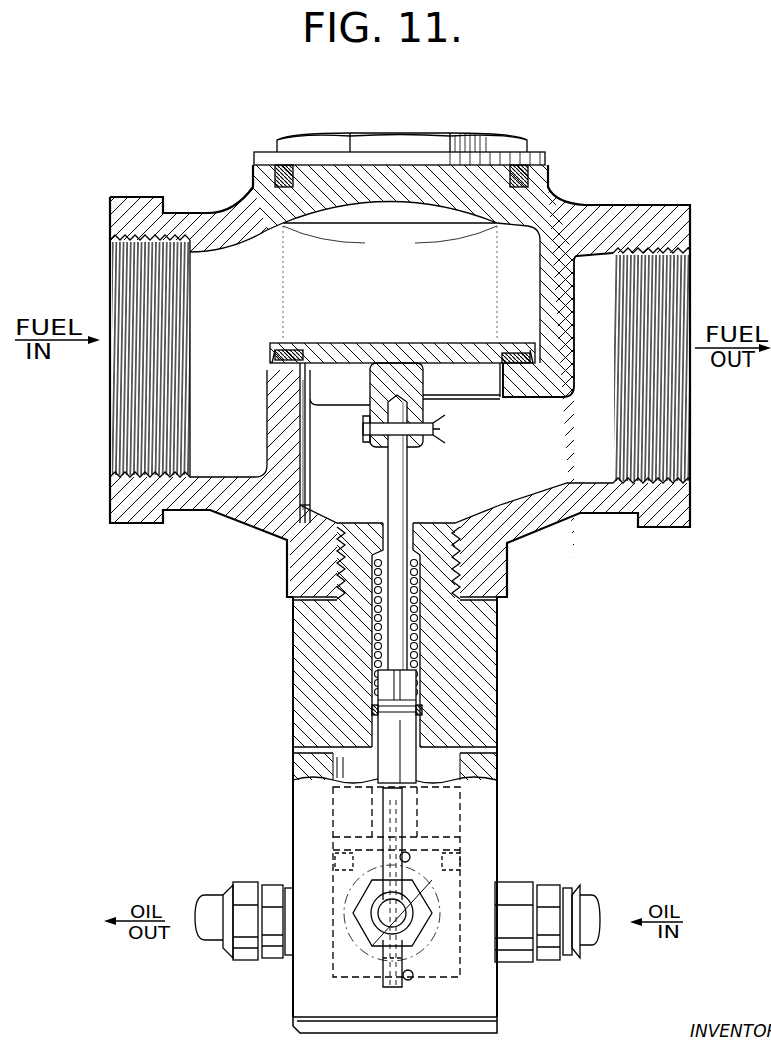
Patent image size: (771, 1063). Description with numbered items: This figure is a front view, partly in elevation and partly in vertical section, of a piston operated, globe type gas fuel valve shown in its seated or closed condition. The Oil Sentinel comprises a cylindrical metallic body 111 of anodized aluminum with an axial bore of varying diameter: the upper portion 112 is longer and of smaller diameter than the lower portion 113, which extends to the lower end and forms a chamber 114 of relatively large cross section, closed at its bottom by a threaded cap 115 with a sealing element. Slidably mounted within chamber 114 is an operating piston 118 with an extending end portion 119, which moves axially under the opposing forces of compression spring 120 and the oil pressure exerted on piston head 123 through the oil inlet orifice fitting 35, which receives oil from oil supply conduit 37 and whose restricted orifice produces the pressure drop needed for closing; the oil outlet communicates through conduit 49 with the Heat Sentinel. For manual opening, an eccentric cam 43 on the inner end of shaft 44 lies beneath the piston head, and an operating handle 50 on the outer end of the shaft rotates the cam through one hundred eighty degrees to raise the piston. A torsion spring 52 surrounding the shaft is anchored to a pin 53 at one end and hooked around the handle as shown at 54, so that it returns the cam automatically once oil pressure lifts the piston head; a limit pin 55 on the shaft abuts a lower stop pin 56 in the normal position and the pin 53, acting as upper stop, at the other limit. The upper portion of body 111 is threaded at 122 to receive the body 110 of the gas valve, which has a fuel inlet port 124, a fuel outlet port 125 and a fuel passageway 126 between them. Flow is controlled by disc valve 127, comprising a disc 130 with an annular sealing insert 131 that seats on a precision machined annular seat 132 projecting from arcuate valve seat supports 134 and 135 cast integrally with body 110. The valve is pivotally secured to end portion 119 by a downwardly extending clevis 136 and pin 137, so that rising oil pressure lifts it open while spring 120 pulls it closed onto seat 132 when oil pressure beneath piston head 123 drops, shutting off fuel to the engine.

The valve body 110 is at (549, 193).
The cylindrical metallic body 111 is at (291, 642).
The upper portion of the bore 112 is at (420, 612).
The lower portion of the bore 113 is at (300, 757).
The chamber 114 is at (310, 783).
The threaded cap 115 is at (305, 1027).
The operating piston 118 is at (420, 753).
The end portion 119 is at (405, 480).
The compression spring 120 is at (417, 644).
The threads 122 is at (333, 550).
The piston head 123 is at (460, 843).
The fuel inlet port 124 is at (126, 312).
The fuel outlet port 125 is at (678, 326).
The fuel passageway 126 is at (438, 270).
The disc valve 127 is at (436, 343).
The disc 130 is at (333, 364).
The annular sealing insert 131 is at (275, 356).
The annular seat 132 is at (273, 367).
The valve seat support 134 is at (292, 440).
The valve seat support 135 is at (568, 320).
The clevis 136 is at (415, 385).
The pin 137 is at (440, 430).
The orifice fitting 35 is at (520, 888).
The oil supply conduit 37 is at (588, 903).
The eccentric cam 43 is at (353, 945).
The shaft 44 is at (408, 912).
The conduit 49 is at (207, 897).
The operating handle 50 is at (388, 818).
The torsion spring 52 is at (432, 938).
The pin 53 is at (408, 862).
The hooked end of spring 54 is at (433, 878).
The limit pin 55 is at (382, 988).
The lower stop pin 56 is at (408, 980).